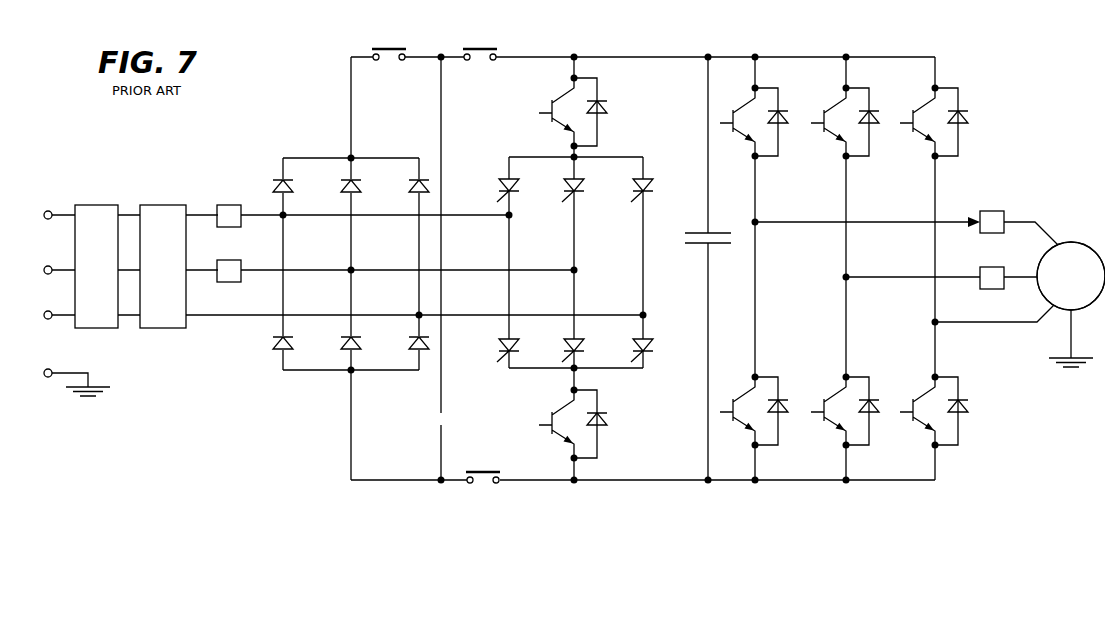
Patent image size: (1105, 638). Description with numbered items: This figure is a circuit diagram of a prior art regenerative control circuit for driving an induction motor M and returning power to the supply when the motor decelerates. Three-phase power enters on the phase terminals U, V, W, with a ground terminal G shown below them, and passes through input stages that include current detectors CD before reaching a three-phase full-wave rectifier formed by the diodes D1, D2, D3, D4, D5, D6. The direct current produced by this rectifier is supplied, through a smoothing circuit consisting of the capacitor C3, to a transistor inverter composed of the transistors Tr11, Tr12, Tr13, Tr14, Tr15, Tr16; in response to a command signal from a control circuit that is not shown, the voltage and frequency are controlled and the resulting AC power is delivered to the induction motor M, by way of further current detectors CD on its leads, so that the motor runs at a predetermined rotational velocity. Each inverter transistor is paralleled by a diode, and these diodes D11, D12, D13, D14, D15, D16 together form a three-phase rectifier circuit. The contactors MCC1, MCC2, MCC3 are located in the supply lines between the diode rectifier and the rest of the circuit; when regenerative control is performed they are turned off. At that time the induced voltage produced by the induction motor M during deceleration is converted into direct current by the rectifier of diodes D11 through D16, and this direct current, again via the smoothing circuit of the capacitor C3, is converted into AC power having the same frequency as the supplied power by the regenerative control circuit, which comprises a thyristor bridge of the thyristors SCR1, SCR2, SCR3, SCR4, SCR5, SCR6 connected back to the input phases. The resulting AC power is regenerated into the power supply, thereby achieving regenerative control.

The phase U input terminal U is at (48, 206).
The phase V input terminal V is at (49, 261).
The phase W input terminal W is at (50, 306).
The ground terminal G is at (574, 319).
The current detector CD is at (610, 250).
The diode D1 is at (272, 186).
The diode D2 is at (340, 186).
The diode D3 is at (408, 186).
The diode D4 is at (272, 344).
The diode D5 is at (340, 344).
The diode D6 is at (408, 344).
The contactor MCC1 is at (392, 46).
The contactor MCC2 is at (482, 46).
The contactor MCC3 is at (485, 469).
The thyristor SCR1 is at (504, 184).
The thyristor SCR2 is at (568, 187).
The thyristor SCR3 is at (679, 168).
The thyristor SCR4 is at (503, 346).
The thyristor SCR5 is at (607, 336).
The thyristor SCR6 is at (653, 338).
The capacitor C3 is at (709, 249).
The transistor Tr11 is at (737, 122).
The transistor Tr12 is at (737, 411).
The transistor Tr13 is at (827, 122).
The transistor Tr14 is at (826, 411).
The transistor Tr15 is at (915, 122).
The transistor Tr16 is at (915, 411).
The diode D11 is at (784, 122).
The diode D12 is at (784, 411).
The diode D13 is at (875, 122).
The diode D14 is at (875, 411).
The diode D15 is at (964, 122).
The diode D16 is at (964, 411).
The induction motor M is at (1071, 276).